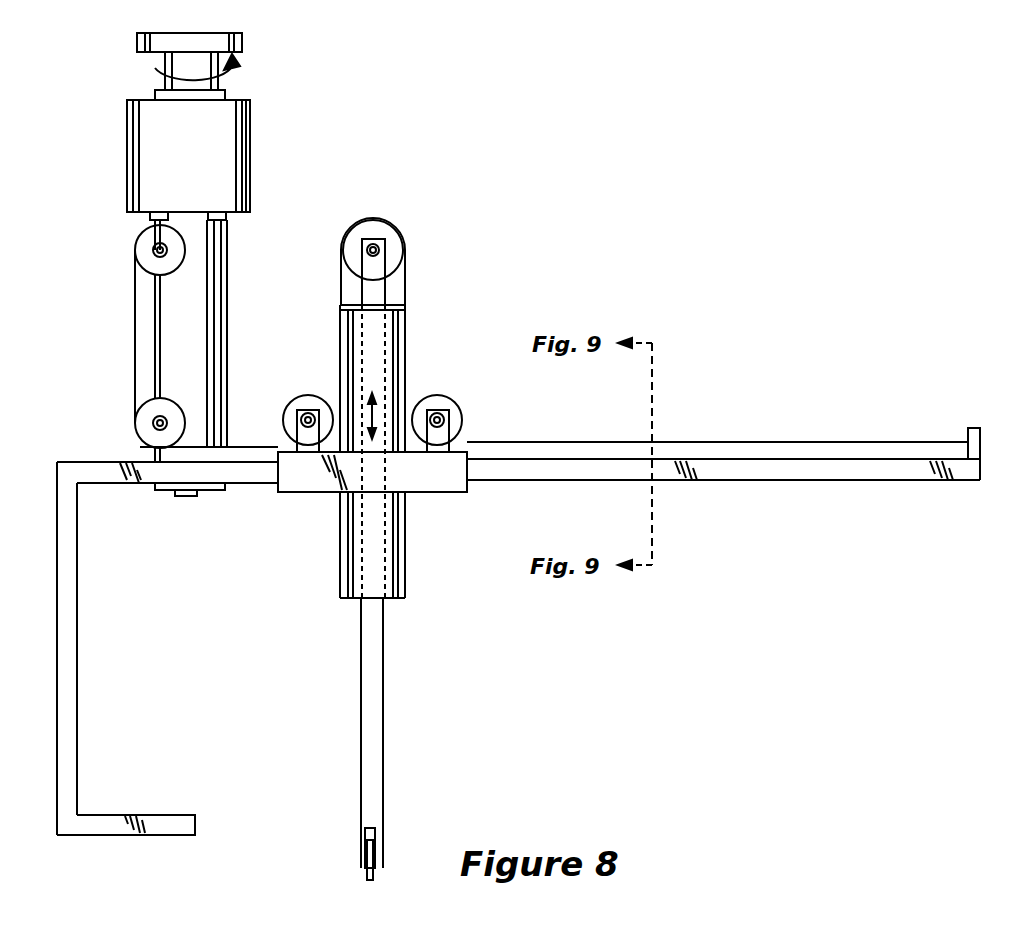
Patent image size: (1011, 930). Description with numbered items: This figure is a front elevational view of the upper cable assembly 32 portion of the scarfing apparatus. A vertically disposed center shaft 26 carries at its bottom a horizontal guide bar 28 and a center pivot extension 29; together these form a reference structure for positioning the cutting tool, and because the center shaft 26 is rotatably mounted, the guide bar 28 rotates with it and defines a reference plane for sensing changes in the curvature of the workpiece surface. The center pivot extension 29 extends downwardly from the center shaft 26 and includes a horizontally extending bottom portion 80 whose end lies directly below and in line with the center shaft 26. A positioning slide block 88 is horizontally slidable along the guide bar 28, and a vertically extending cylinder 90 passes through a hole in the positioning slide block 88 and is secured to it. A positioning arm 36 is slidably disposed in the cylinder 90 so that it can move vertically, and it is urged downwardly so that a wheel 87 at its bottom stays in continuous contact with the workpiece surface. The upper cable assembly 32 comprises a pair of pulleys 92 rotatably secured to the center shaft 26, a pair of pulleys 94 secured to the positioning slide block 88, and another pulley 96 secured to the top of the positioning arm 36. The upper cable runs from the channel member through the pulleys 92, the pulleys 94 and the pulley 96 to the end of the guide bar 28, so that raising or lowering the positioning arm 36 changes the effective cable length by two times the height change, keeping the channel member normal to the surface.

The center shaft 26 is at (221, 272).
The horizontal guide bar 28 is at (258, 487).
The center pivot extension 29 is at (72, 630).
The upper cable assembly 32 is at (118, 308).
The positioning arm 36 is at (382, 295).
The horizontally extending bottom portion 80 is at (115, 838).
The wheel 87 is at (358, 866).
The positioning slide block 88 is at (458, 488).
The vertically extending cylinder 90 is at (400, 345).
The pair of pulleys 92 is at (140, 245).
The pair of pulleys 94 is at (298, 406).
The pulley 96 is at (385, 228).